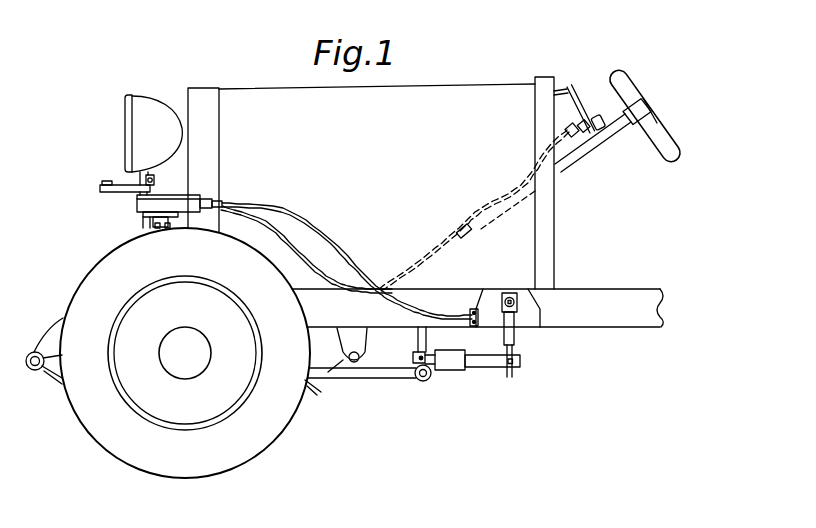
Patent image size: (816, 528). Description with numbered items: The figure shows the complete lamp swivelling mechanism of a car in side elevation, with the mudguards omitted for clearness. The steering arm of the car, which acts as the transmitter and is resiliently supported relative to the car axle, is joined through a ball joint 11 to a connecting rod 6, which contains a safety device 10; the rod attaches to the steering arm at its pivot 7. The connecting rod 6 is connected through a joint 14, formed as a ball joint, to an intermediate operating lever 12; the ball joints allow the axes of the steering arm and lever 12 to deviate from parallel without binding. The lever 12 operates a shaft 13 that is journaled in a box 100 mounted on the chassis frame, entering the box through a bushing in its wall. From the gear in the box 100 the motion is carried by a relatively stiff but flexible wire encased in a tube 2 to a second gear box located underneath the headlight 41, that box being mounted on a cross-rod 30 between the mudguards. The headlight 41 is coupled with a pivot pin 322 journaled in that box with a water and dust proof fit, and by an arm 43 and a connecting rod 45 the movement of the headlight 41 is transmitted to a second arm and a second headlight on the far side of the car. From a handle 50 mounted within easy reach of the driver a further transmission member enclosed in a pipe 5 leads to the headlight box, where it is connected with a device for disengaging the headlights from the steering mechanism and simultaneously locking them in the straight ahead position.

The headlight 41 is at (150, 111).
The pivot pin 322 is at (135, 182).
The connecting rod 45 is at (102, 184).
The arm 43 is at (118, 193).
The cross-rod 30 is at (140, 228).
The tube 2 is at (321, 234).
The pipe 5 is at (432, 252).
The handle 50 is at (600, 120).
The shaft 13 is at (517, 295).
The intermediate operating lever 12 is at (514, 342).
The box 100 is at (542, 317).
The joint 14 is at (518, 368).
The connecting rod 6 is at (497, 363).
The safety device 10 is at (457, 363).
The ball joint 11 is at (417, 357).
The steering knuckle pivot 7 is at (421, 380).